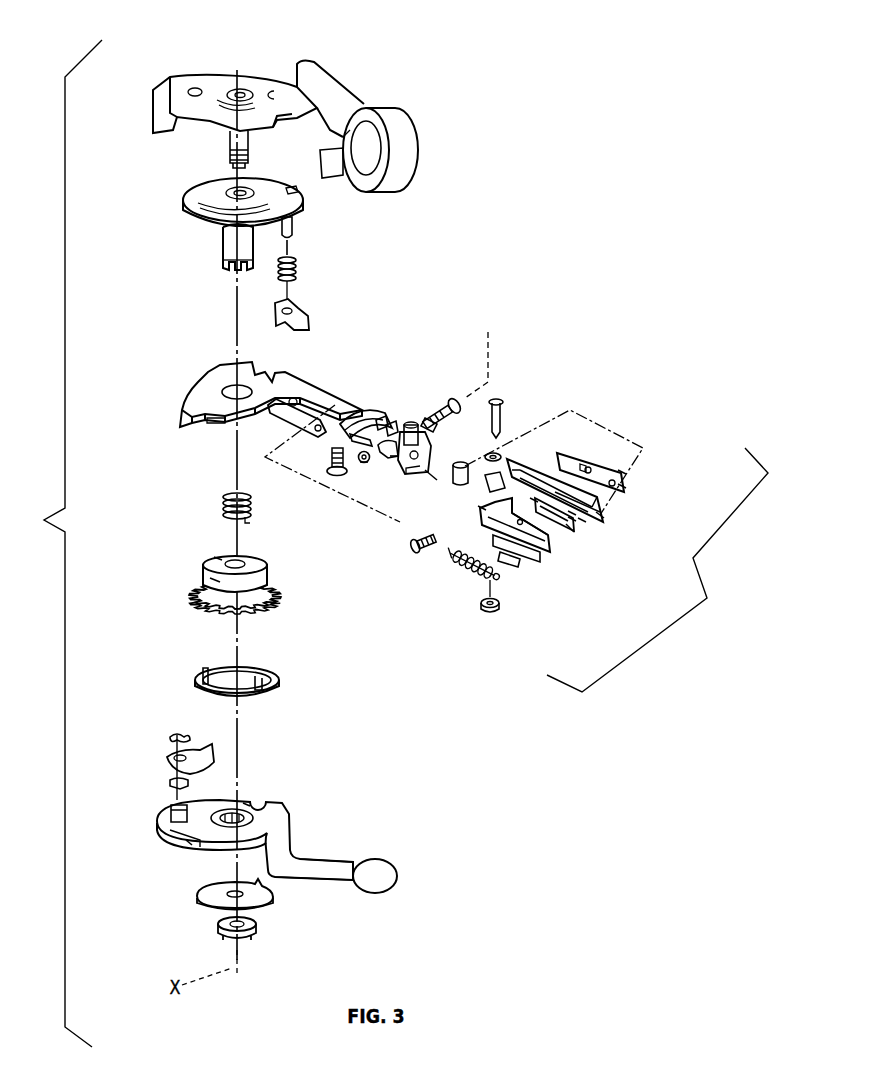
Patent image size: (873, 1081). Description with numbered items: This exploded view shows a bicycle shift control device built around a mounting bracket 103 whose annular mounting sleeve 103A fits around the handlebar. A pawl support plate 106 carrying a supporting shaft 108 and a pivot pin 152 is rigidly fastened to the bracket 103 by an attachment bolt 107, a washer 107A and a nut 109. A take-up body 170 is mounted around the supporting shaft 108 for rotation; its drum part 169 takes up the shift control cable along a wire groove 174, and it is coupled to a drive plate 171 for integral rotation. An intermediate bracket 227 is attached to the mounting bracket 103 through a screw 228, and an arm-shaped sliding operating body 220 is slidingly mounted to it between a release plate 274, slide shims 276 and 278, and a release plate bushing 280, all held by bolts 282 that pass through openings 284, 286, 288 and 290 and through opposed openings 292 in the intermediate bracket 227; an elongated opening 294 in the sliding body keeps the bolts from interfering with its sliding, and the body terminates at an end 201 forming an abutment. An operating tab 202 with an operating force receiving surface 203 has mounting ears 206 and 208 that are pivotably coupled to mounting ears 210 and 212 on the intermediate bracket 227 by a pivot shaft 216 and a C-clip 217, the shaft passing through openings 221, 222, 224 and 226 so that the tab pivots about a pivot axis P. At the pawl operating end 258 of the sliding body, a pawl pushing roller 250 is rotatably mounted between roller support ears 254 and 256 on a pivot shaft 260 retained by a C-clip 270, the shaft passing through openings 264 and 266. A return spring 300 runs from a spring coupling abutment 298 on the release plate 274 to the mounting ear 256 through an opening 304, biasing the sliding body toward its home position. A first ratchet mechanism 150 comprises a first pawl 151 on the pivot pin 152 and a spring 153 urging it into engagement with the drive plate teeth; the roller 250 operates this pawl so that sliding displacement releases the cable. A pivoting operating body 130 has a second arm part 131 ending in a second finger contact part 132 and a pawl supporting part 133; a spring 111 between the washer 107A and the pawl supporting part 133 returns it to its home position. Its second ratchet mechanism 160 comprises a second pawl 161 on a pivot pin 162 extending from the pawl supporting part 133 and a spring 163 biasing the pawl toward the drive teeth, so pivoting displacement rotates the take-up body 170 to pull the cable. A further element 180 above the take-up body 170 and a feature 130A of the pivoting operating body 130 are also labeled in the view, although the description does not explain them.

The mounting bracket 103 is at (262, 88).
The annular mounting sleeve 103A is at (352, 92).
The attachment bolt 107 is at (228, 141).
The pawl support plate 106 is at (190, 194).
The supporting shaft 108 is at (222, 248).
The pivot pin 152 is at (293, 223).
The spring 153 is at (298, 268).
The first pawl 151 is at (300, 310).
The intermediate bracket 227 is at (303, 384).
The opposed openings 292 is at (318, 427).
The screw 228 is at (338, 478).
The mounting ear 206 is at (383, 452).
The C-clip 217 is at (362, 461).
The opening 221 is at (394, 456).
The mounting ear 210 is at (362, 412).
The opening 224 is at (364, 428).
The mounting ear 212 is at (381, 418).
The opening 226 is at (390, 422).
The mounting ear 208 is at (410, 424).
The opening 222 is at (427, 418).
The pivot shaft 216 is at (450, 400).
The operating force receiving surface 203 is at (419, 450).
The operating tab 202 is at (403, 467).
The pawl pushing roller 250 is at (437, 485).
The roller support ear 254 is at (492, 452).
The pivot shaft 260 is at (496, 400).
The opening 264 is at (498, 449).
The opening 266 is at (490, 474).
The pawl operating end 258 is at (516, 458).
The roller support ear 256 is at (563, 458).
The opening 288 is at (622, 471).
The slide shim 278 is at (622, 484).
The elongated opening 294 is at (600, 497).
The end 201 is at (602, 517).
The release plate 274 is at (535, 552).
The spring coupling abutment 298 is at (511, 565).
The slide shim 276 is at (568, 529).
The opening 286 is at (573, 523).
The release plate bushing 280 is at (573, 516).
The opening 290 is at (582, 522).
The sliding operating body 220 is at (590, 529).
The opening 304 is at (533, 500).
The opening 284 is at (480, 510).
The bolt 282 is at (416, 548).
The return spring 300 is at (470, 572).
The C-clip 270 is at (490, 611).
The spring 180 is at (223, 506).
The take-up body 170 is at (203, 568).
The drum part 169 is at (214, 559).
The wire groove 174 is at (212, 581).
The drive plate 171 is at (205, 594).
The first ratchet mechanism 150 is at (285, 579).
The spring 111 is at (197, 680).
The second ratchet mechanism 160 is at (148, 742).
The second pawl 161 is at (172, 766).
The spring 163 is at (172, 788).
The pivot pin 162 is at (172, 811).
The pivoting operating body 130 is at (317, 896).
The crank hub opening 130A is at (247, 805).
The pawl supporting part 133 is at (190, 838).
The second arm part 131 is at (297, 880).
The second finger contact part 132 is at (384, 890).
The washer 107A is at (203, 893).
The nut 109 is at (218, 929).
The pivot axis P is at (478, 355).